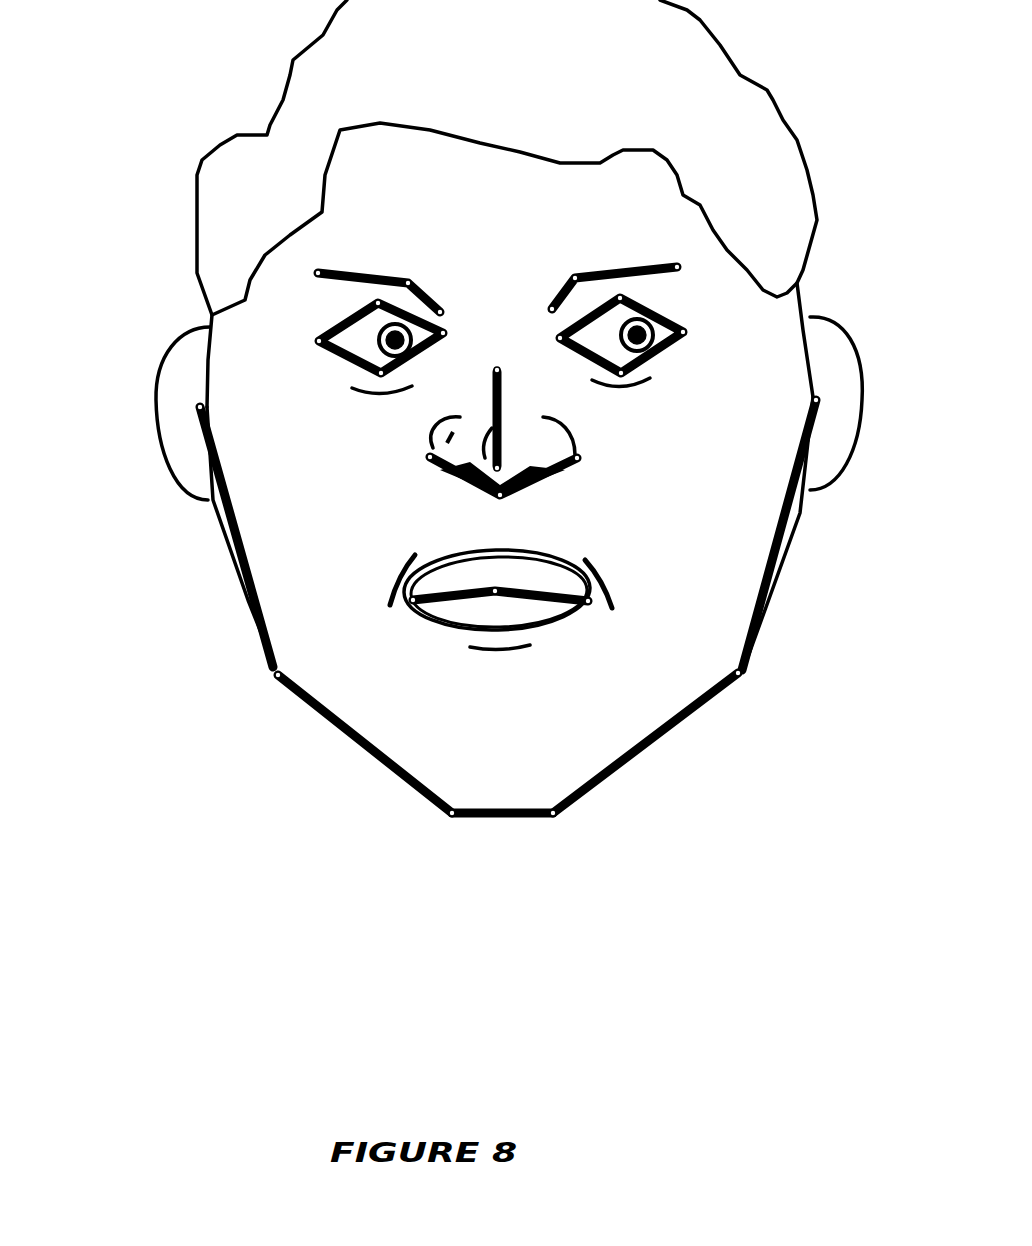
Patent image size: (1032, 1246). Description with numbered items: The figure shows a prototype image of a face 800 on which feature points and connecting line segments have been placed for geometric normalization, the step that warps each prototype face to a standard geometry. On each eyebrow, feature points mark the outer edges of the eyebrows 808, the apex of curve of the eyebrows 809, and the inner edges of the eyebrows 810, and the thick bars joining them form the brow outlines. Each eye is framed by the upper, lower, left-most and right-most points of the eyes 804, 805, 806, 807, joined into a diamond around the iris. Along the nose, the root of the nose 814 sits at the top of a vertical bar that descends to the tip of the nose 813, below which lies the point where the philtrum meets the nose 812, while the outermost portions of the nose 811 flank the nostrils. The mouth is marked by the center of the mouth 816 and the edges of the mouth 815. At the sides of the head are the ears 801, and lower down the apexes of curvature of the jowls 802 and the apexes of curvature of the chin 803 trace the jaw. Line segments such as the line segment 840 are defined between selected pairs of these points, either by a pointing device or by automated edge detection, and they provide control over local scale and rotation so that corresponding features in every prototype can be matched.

The face 800 is at (243, 337).
The ears 801 is at (190, 403).
The apexes of curvature of the jowls 802 is at (270, 683).
The apexes of curvature of the chin 803 is at (447, 822).
The upper, lower, left-most and right-most points of the eyes 804 is at (315, 340).
The upper, lower, left-most and right-most points of the eyes 805 is at (455, 336).
The upper, lower, left-most and right-most points of the eyes 806 is at (367, 297).
The upper, lower, left-most and right-most points of the eyes 807 is at (380, 385).
The outer edges of the eyebrows 808 is at (318, 267).
The apex of curve of the eyebrows 809 is at (415, 273).
The inner edges of the eyebrows 810 is at (443, 310).
The outermost portions of the nose 811 is at (417, 460).
The point where the philtrum meets the nose 812 is at (505, 502).
The tip of the nose 813 is at (502, 455).
The root of the nose 814 is at (502, 368).
The edges of the mouth 815 is at (408, 610).
The center of the mouth 816 is at (497, 592).
The line segment 840 is at (773, 510).